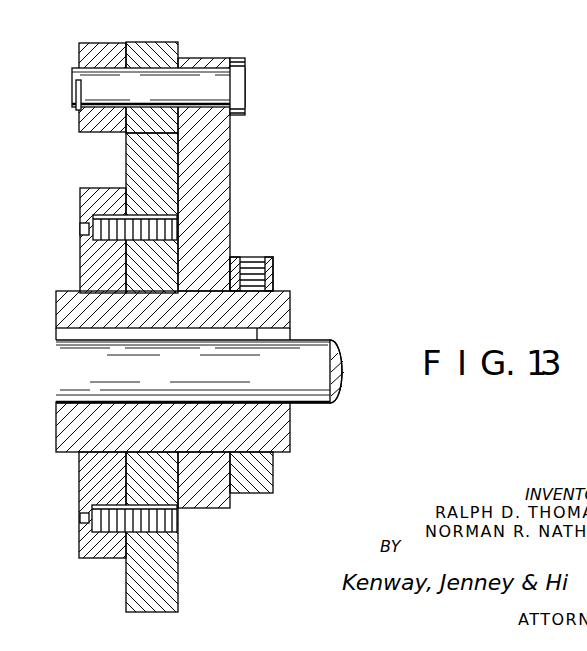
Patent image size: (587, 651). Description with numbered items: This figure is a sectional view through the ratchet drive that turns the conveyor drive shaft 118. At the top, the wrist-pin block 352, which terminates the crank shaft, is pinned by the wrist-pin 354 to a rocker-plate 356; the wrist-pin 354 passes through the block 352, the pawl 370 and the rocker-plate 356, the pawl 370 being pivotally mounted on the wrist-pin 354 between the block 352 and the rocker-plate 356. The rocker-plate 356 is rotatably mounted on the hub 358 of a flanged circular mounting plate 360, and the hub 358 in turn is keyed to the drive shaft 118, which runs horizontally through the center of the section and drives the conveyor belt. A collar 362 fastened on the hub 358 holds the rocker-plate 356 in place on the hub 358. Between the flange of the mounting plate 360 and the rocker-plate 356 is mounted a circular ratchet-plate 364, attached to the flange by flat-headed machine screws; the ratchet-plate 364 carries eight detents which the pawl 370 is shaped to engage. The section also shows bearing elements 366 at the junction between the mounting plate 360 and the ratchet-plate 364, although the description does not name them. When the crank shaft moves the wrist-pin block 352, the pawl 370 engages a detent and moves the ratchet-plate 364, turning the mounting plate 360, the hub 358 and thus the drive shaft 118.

The drive shaft 118 is at (318, 357).
The wrist-pin block 352 is at (82, 122).
The wrist-pin 354 is at (213, 89).
The rocker-plate 356 is at (212, 187).
The hub 358 is at (270, 317).
The flanged circular mounting plate 360 is at (100, 265).
The collar 362 is at (272, 273).
The circular ratchet-plate 364 is at (140, 172).
The needle bearing 366 is at (80, 216).
The pawl 370 is at (160, 50).